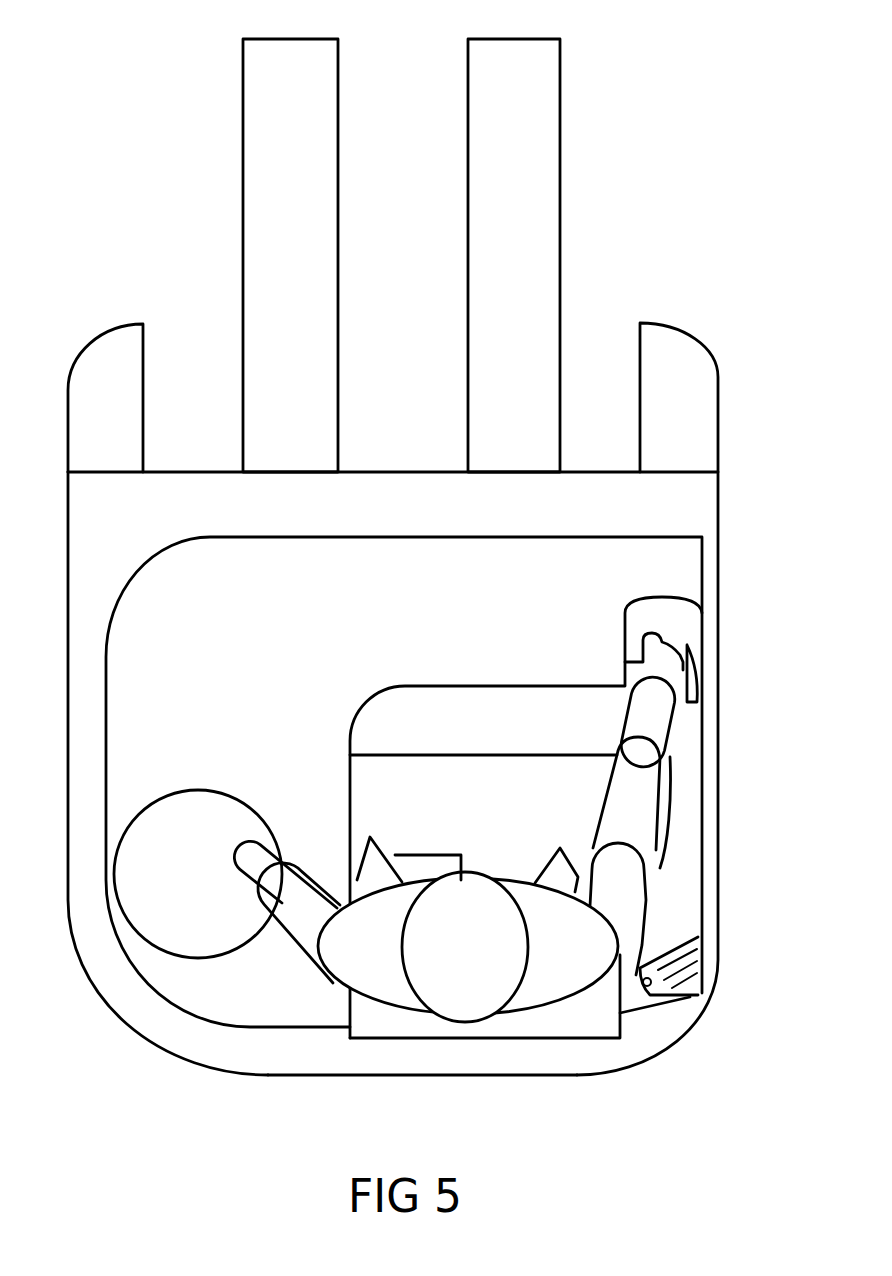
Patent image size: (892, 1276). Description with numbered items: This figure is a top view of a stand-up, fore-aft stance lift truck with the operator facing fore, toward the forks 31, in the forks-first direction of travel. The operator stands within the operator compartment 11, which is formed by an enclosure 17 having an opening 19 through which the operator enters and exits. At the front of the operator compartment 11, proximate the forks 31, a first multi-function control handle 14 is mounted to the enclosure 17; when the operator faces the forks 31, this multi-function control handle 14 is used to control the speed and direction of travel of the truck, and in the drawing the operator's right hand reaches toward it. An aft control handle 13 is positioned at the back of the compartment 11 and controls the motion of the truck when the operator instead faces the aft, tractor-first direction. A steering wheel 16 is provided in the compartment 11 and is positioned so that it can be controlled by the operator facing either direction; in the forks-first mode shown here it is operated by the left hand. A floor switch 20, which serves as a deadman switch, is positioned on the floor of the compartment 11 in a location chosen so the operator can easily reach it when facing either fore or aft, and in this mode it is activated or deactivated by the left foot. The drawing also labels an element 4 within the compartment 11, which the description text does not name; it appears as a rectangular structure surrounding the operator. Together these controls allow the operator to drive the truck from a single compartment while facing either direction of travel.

The forks 31 is at (560, 213).
The operator compartment 11 is at (720, 848).
The opening 19 is at (453, 1050).
The enclosure 17 is at (253, 1030).
The seat 4 is at (602, 1022).
The multi-function control handle 14 is at (692, 688).
The aft control handle 13 is at (693, 993).
The steering wheel 16 is at (122, 915).
The floor switch 20 is at (433, 855).